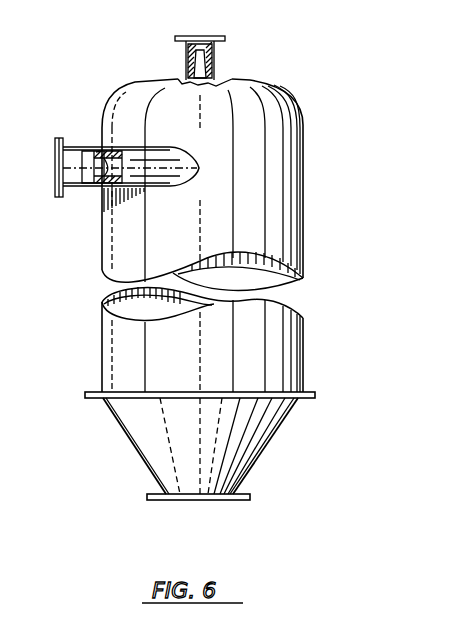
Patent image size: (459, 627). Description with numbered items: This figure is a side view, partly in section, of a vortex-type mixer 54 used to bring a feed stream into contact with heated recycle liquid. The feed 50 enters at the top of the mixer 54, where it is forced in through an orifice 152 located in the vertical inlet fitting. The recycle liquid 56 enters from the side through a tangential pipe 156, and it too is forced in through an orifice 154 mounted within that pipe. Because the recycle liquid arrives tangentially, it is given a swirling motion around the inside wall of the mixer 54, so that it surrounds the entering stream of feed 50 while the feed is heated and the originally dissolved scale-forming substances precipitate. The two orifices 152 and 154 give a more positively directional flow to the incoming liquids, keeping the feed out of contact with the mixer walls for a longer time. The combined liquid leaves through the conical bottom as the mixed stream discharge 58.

The feed 50 is at (210, 32).
The orifice 152 is at (214, 74).
The vortex-type mixer 54 is at (304, 213).
The recycle liquid 56 is at (54, 167).
The tangential pipe 156 is at (77, 148).
The orifice 154 is at (98, 184).
The mixed stream discharge 58 is at (198, 500).